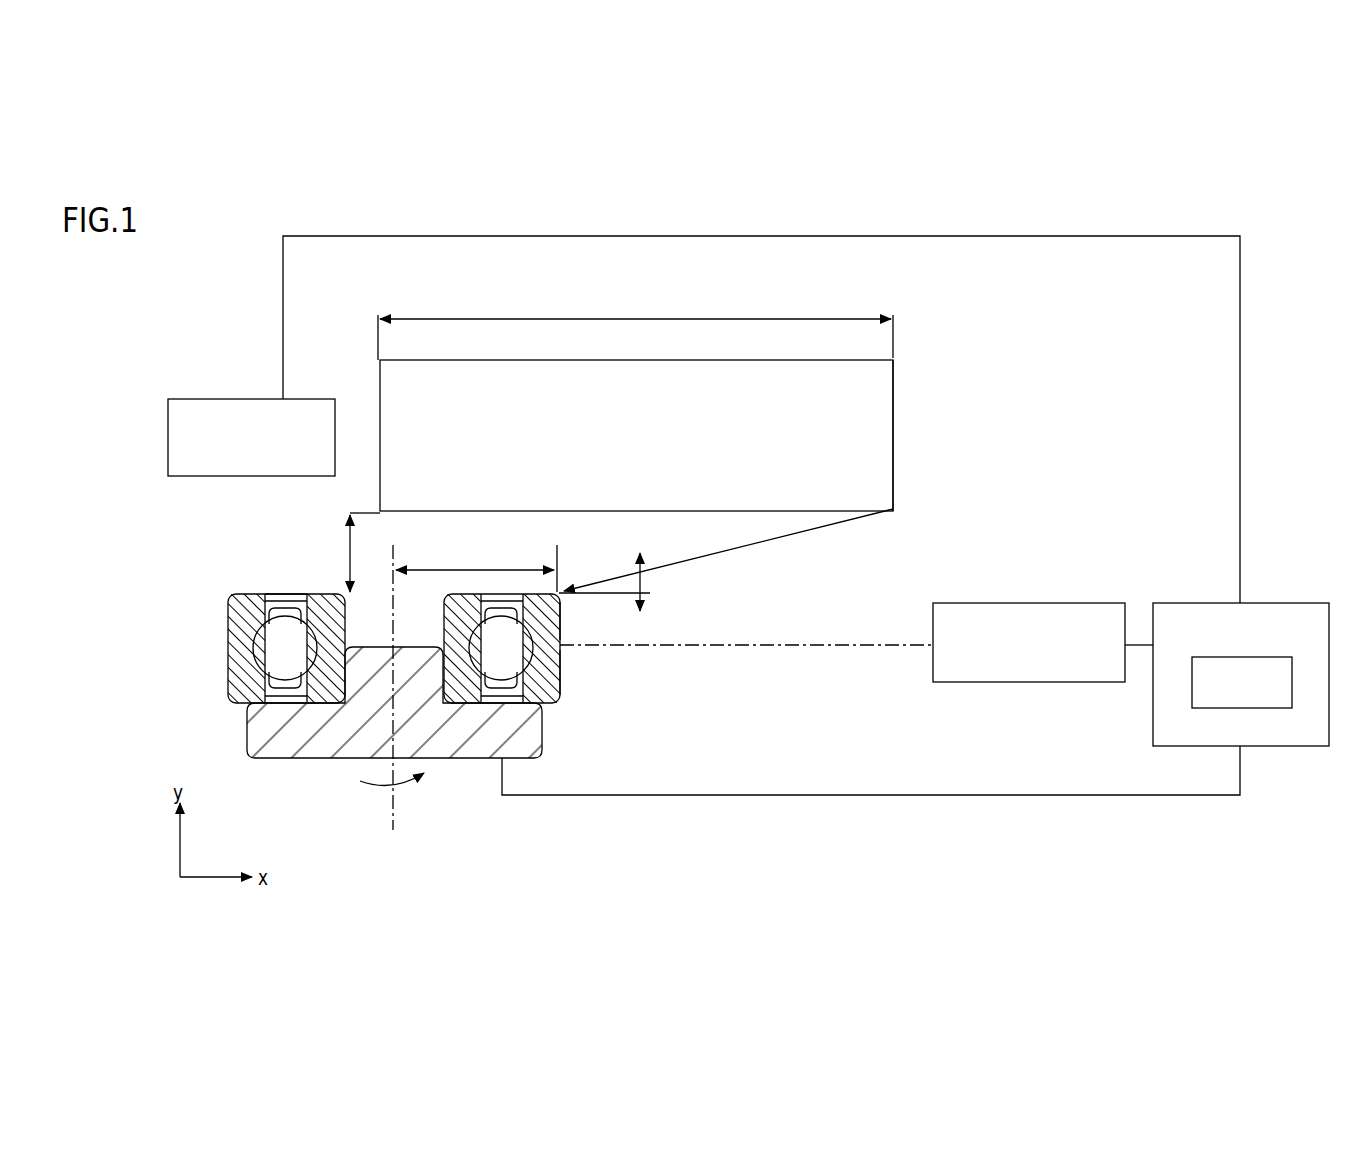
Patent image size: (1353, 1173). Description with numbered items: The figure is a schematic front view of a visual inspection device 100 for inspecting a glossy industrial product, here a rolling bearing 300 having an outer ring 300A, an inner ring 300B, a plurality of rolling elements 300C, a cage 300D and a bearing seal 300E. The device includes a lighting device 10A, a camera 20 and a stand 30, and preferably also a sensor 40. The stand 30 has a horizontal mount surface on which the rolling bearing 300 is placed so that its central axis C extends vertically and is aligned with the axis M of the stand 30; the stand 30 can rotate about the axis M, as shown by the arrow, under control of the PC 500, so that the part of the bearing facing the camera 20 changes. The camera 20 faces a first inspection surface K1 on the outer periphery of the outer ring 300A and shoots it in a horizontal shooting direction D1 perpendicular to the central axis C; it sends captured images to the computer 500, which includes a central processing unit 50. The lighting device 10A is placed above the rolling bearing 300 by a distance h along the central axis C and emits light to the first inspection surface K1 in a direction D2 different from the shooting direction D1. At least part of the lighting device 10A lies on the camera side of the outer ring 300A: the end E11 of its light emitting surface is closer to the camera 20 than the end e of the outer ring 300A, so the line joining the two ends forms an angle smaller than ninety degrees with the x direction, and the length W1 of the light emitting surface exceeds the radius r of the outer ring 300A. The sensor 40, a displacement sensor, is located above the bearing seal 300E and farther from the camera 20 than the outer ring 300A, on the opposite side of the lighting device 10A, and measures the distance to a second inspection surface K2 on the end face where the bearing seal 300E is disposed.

The visual inspection device 100 is at (978, 340).
The sensor 40 is at (295, 398).
The lighting device 10A is at (878, 478).
The end of the light emitting surface E11 is at (893, 428).
The length of the light emitting surface W1 is at (635, 323).
The camera 20 is at (1052, 602).
The computer (PC) 500 is at (1300, 602).
The central processing unit (CPU) 50 is at (1252, 656).
The stand 30 is at (527, 720).
The rolling bearing 300 is at (252, 668).
The outer ring 300A is at (247, 603).
The inner ring 300B is at (317, 597).
The rolling elements 300C is at (286, 662).
The cage 300D is at (240, 630).
The bearing seal 300E is at (276, 596).
The second inspection surface K2 is at (293, 596).
The first inspection surface K1 is at (560, 670).
The end of the outer ring e is at (560, 620).
The central axis C is at (394, 550).
The axis of the stand M is at (395, 808).
The distance h is at (354, 552).
The radius of the outer periphery of the outer ring r is at (476, 566).
The direction of light emission D2 is at (702, 543).
The shooting direction D1 is at (826, 668).